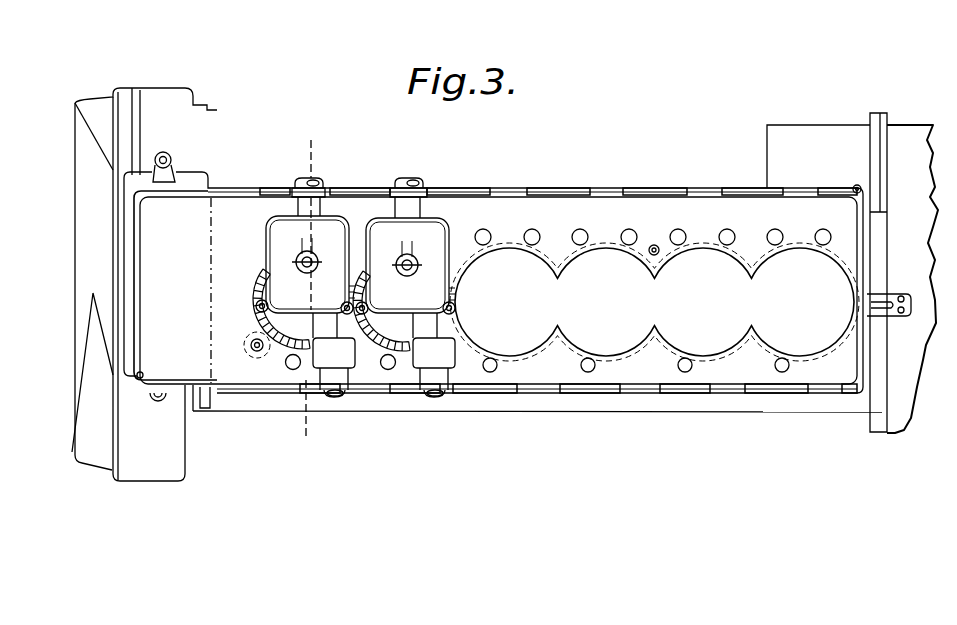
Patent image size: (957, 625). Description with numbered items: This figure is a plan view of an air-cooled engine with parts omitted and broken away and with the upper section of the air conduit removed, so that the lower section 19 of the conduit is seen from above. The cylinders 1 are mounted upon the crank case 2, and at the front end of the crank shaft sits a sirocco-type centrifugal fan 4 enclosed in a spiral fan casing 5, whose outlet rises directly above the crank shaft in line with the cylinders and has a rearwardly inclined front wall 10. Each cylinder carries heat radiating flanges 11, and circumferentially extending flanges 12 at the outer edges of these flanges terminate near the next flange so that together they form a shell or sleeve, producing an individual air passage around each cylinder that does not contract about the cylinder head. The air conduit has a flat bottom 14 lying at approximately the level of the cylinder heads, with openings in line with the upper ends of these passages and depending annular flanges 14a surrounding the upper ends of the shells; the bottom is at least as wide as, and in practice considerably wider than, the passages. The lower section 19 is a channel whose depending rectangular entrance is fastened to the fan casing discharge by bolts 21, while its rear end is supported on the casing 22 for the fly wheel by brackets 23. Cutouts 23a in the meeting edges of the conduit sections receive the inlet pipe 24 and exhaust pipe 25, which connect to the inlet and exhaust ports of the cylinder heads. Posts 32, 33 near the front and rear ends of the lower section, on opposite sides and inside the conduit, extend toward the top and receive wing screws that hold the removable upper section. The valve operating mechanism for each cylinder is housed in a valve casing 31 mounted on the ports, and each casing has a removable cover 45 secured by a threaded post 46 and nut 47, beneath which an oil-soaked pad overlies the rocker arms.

The cylinders 1 is at (262, 322).
The crank case 2 is at (472, 404).
The centrifugal fan 4 is at (304, 292).
The fan casing 5 is at (145, 478).
The front wall of the outlet 10 is at (90, 226).
The heat radiating flanges 11 is at (297, 323).
The circumferentially extending flanges 12 is at (256, 282).
The bottom of the air conduit 14 is at (216, 240).
The depending annular flanges 14a is at (518, 347).
The lower section of the air conduit 19 is at (500, 400).
The bolts 21 is at (163, 152).
The casing for the fly wheel 22 is at (910, 133).
The brackets 23 is at (886, 295).
The cutouts 23a is at (603, 190).
The inlet pipe 24 is at (323, 394).
The exhaust pipe 25 is at (400, 195).
The valve casing 31 is at (259, 228).
The post 32 is at (250, 347).
The post 33 is at (656, 244).
The removable cover 45 is at (268, 263).
The threaded post 46 is at (314, 274).
The nut 47 is at (301, 274).